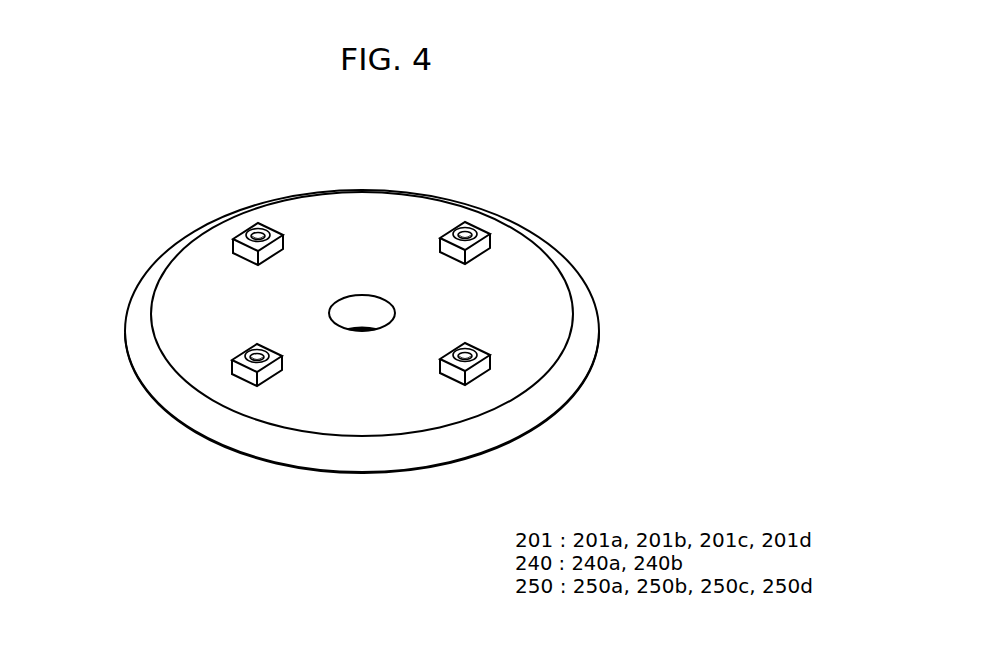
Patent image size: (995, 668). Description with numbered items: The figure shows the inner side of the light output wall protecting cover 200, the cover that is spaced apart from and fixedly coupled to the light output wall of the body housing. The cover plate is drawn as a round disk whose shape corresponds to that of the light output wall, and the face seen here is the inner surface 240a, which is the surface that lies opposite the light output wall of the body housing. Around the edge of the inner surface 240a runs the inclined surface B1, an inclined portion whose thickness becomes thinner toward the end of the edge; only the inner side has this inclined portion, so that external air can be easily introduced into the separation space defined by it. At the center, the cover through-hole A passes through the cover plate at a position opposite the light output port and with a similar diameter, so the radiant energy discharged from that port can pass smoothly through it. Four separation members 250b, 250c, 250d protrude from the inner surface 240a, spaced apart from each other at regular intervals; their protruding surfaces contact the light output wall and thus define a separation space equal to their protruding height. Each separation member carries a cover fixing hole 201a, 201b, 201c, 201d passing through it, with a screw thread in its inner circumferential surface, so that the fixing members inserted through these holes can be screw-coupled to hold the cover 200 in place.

The light output wall protecting cover 200 is at (630, 180).
The inner surface 240a is at (442, 409).
The inclined surface B1 is at (380, 454).
The cover through-hole A is at (363, 312).
The separation member 250d is at (236, 241).
The cover fixing hole 201d is at (257, 223).
The separation member 250b is at (486, 247).
The cover fixing hole 201a is at (463, 225).
The cover fixing hole 201b is at (468, 345).
The separation member 250c is at (242, 367).
The cover fixing hole 201c is at (258, 344).